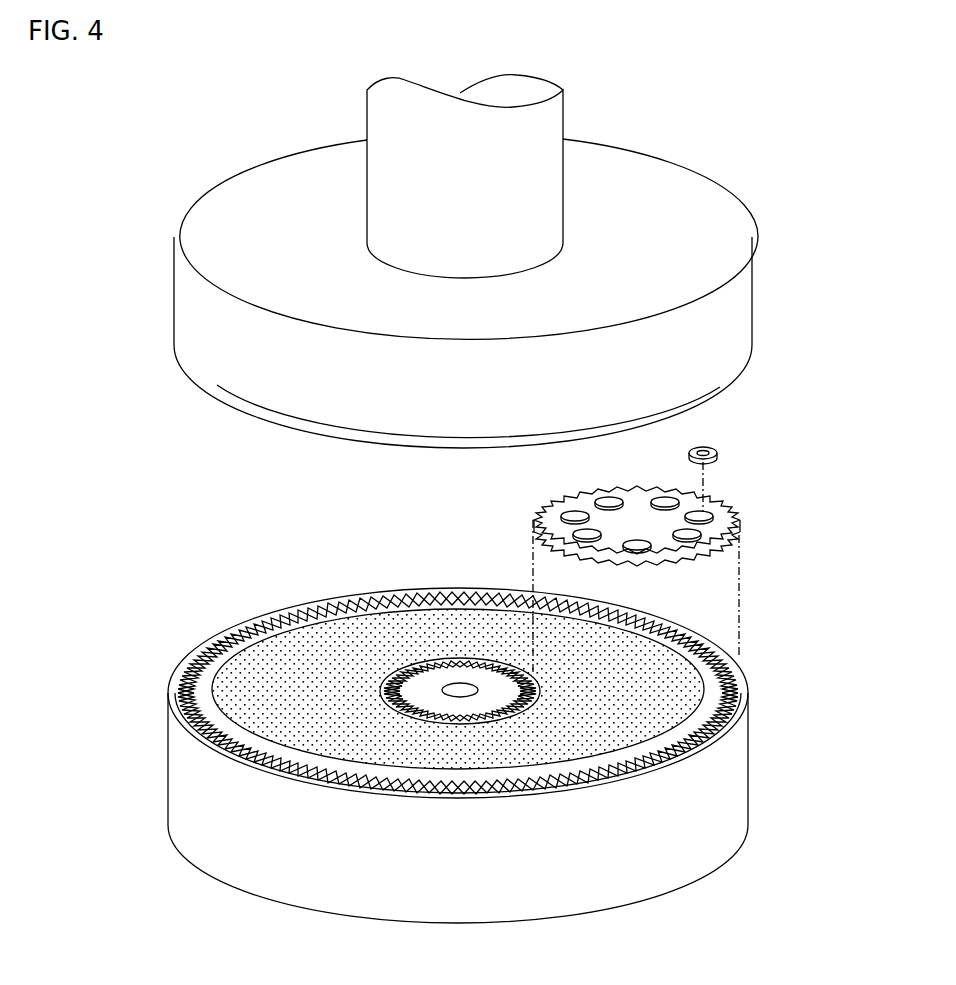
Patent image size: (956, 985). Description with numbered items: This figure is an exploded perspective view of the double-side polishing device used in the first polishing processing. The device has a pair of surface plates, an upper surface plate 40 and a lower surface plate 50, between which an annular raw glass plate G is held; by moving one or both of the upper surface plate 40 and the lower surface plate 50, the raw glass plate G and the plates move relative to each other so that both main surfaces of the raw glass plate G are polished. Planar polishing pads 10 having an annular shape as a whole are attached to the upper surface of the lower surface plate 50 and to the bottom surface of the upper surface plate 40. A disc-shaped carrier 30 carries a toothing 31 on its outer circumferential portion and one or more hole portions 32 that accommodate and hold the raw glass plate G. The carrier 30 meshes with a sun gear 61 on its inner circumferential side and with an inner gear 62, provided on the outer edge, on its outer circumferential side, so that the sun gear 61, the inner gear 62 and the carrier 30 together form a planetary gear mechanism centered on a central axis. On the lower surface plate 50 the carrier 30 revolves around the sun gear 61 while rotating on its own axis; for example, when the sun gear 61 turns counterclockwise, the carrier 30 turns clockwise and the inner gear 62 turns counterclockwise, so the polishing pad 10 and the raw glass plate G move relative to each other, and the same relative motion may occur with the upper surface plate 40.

The polishing pad 10 is at (243, 662).
The carrier 30 is at (737, 521).
The toothing 31 is at (715, 493).
The hole portion 32 is at (648, 540).
The upper surface plate 40 is at (762, 288).
The lower surface plate 50 is at (758, 762).
The sun gear 61 is at (424, 670).
The inner gear 62 is at (353, 600).
The raw glass plate G is at (717, 449).